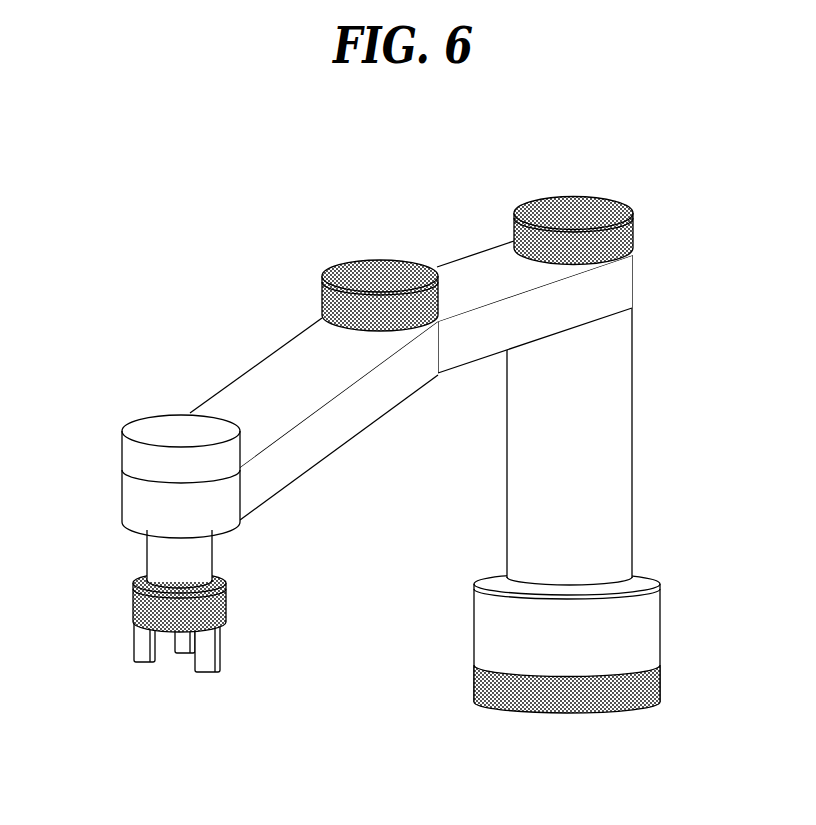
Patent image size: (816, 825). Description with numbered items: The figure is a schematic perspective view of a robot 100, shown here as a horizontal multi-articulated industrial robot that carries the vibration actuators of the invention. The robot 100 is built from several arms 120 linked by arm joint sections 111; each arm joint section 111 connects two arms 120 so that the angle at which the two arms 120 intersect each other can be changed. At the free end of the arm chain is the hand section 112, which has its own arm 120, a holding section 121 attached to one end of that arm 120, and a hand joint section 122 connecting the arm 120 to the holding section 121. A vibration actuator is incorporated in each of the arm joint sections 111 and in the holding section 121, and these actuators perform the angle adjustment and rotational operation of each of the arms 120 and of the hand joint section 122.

The robot 100 is at (203, 228).
The arm joint section 111 is at (615, 238).
The hand section 112 is at (272, 611).
The arm 120 is at (473, 265).
The holding section 121 is at (143, 647).
The hand joint section 122 is at (142, 610).